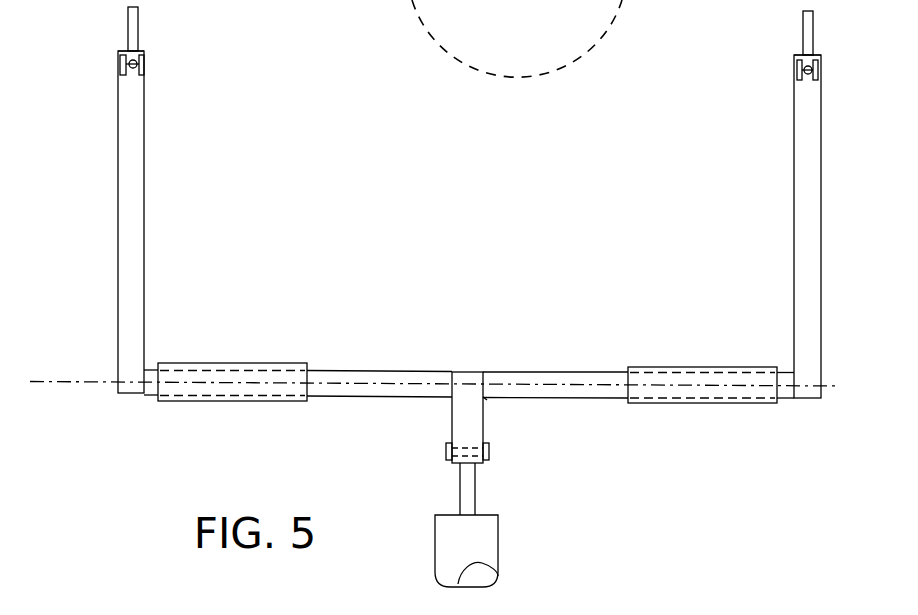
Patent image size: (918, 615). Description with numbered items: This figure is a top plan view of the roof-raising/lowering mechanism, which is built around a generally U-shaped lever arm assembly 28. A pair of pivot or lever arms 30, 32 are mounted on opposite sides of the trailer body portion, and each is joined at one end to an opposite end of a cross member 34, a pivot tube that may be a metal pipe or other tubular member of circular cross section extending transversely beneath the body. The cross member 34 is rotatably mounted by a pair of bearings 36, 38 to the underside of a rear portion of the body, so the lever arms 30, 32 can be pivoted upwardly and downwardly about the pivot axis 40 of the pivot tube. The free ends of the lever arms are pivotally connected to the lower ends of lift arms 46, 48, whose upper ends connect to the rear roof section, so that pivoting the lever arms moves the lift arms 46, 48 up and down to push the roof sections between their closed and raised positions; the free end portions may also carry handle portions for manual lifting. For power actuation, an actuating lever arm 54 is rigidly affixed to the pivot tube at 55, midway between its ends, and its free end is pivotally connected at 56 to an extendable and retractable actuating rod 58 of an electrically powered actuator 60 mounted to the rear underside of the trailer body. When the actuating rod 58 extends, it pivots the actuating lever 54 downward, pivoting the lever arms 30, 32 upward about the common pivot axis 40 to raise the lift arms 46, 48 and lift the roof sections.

The lever arm assembly 28 is at (112, 428).
The lever arm 30 is at (118, 204).
The lever arm 32 is at (794, 228).
The cross member 34 is at (338, 370).
The bearing 36 is at (230, 363).
The bearing 38 is at (697, 367).
The pivot axis 40 is at (90, 381).
The lift arm 46 is at (144, 70).
The lift arm 48 is at (802, 72).
The actuating lever arm 54 is at (473, 422).
The affixment point 55 is at (487, 400).
The pivotal connection 56 is at (489, 455).
The actuating rod 58 is at (472, 487).
The actuator 60 is at (498, 557).